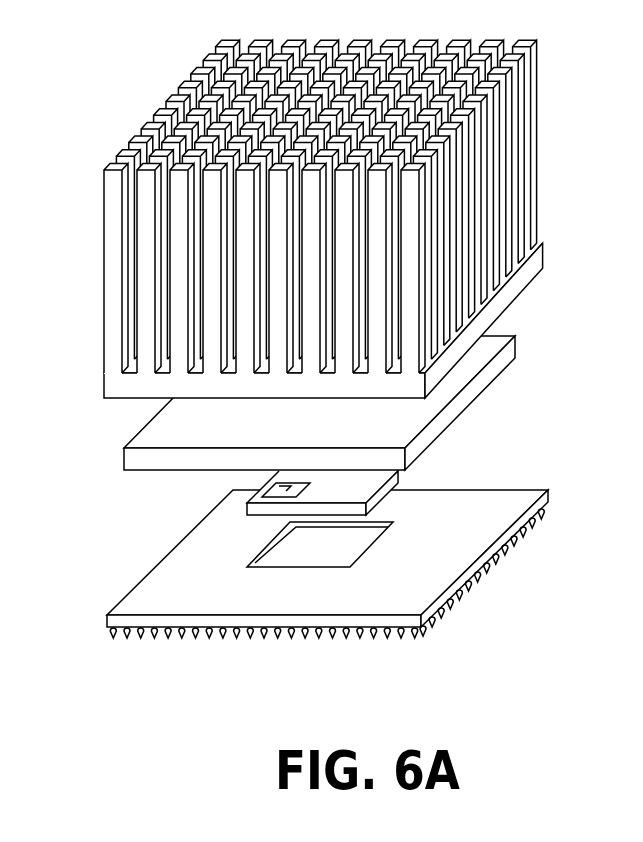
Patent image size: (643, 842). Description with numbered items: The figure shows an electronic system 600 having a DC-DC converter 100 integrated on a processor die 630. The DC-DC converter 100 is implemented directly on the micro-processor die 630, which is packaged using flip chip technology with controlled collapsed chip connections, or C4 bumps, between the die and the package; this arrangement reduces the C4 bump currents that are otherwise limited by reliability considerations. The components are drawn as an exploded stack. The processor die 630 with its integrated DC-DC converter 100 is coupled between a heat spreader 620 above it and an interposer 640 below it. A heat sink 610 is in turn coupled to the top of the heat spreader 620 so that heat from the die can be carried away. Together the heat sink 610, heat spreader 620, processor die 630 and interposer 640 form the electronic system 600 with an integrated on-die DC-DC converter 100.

The electronic system 600 is at (365, 366).
The heat sink 610 is at (520, 290).
The heat spreader 620 is at (463, 405).
The processor die 630 is at (402, 494).
The interposer 640 is at (445, 605).
The DC-DC converter 100 is at (258, 494).